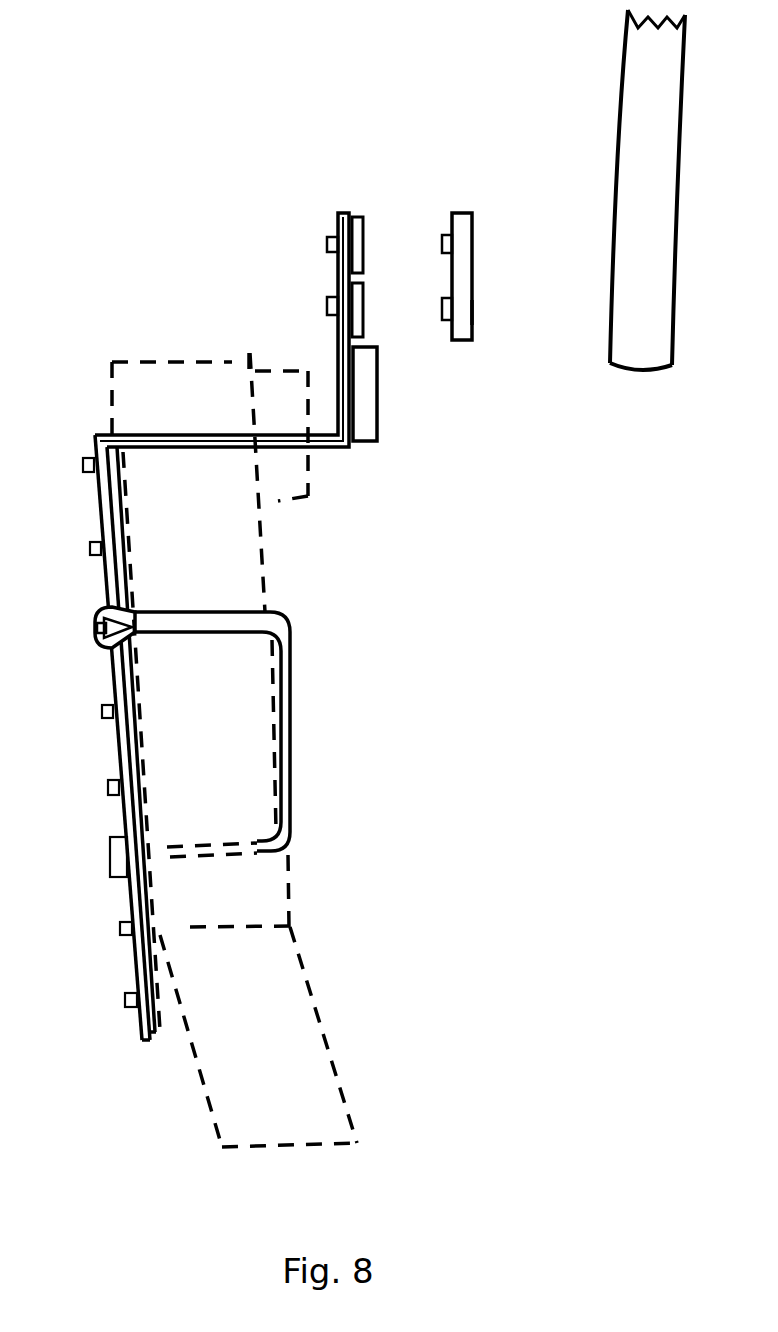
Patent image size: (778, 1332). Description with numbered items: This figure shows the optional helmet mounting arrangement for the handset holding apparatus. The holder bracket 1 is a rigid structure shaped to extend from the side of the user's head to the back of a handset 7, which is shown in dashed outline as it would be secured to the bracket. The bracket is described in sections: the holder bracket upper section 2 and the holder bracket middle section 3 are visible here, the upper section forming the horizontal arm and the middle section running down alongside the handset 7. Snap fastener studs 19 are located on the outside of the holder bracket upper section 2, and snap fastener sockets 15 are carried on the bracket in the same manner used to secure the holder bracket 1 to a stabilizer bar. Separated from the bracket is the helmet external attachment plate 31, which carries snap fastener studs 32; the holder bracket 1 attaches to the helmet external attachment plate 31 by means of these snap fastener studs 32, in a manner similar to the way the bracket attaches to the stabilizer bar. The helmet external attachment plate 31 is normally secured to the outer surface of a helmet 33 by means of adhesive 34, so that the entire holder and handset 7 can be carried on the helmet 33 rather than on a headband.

The holder bracket 1 is at (100, 432).
The holder bracket upper section 2 is at (338, 338).
The holder bracket middle section 3 is at (325, 452).
The handset 7 is at (287, 993).
The snap fastener sockets 15 is at (353, 217).
The snap fastener studs 19 is at (325, 240).
The helmet external attachment plate 31 is at (463, 210).
The snap fastener studs 32 is at (447, 318).
The helmet 33 is at (615, 105).
The adhesive 34 is at (472, 312).